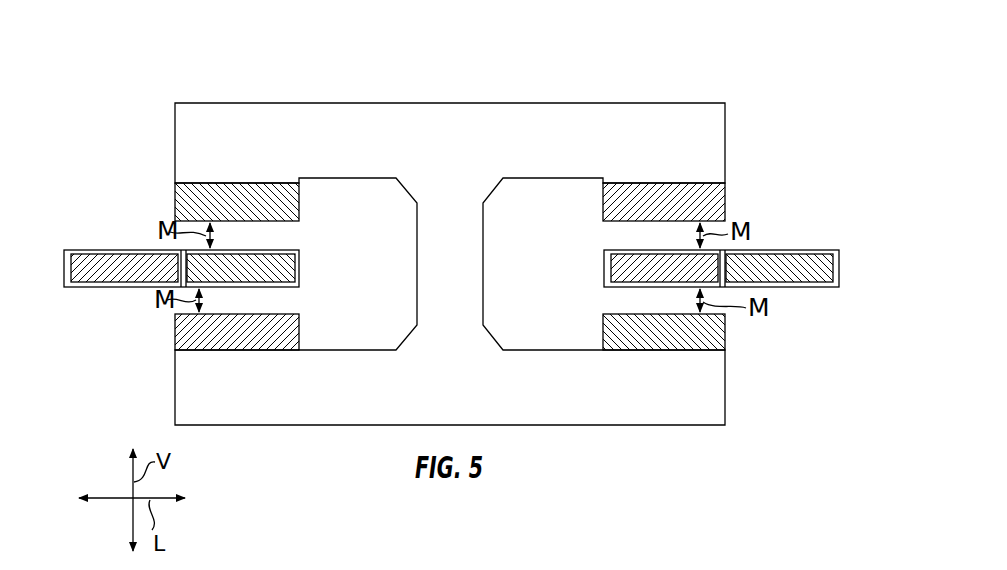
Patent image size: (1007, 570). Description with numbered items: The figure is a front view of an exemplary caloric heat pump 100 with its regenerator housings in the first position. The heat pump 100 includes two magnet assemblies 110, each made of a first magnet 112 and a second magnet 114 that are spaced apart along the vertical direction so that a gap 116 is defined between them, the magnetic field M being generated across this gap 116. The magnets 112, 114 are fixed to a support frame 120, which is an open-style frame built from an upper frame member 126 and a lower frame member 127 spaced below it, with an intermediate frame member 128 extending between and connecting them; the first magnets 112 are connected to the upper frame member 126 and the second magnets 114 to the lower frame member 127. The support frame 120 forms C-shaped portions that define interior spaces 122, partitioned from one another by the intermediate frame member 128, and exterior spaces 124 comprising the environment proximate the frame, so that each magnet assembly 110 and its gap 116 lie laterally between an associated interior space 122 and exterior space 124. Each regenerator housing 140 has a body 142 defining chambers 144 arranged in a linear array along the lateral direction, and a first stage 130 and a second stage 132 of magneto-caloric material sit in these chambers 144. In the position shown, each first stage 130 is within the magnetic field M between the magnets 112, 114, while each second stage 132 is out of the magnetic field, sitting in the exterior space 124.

The heat pump 100 is at (207, 73).
The magnet assembly 110 is at (137, 158).
The first magnet 112 is at (175, 200).
The second magnet 114 is at (172, 345).
The gap 116 is at (299, 240).
The support frame 120 is at (483, 95).
The interior space 122 is at (383, 215).
The exterior space 124 is at (75, 391).
The upper frame member 126 is at (320, 128).
The lower frame member 127 is at (303, 388).
The intermediate frame member 128 is at (485, 200).
The first stage 130 is at (226, 263).
The second stage 132 is at (118, 275).
The regenerator housing 140 is at (118, 249).
The body 142 is at (64, 262).
The chamber 144 is at (137, 289).